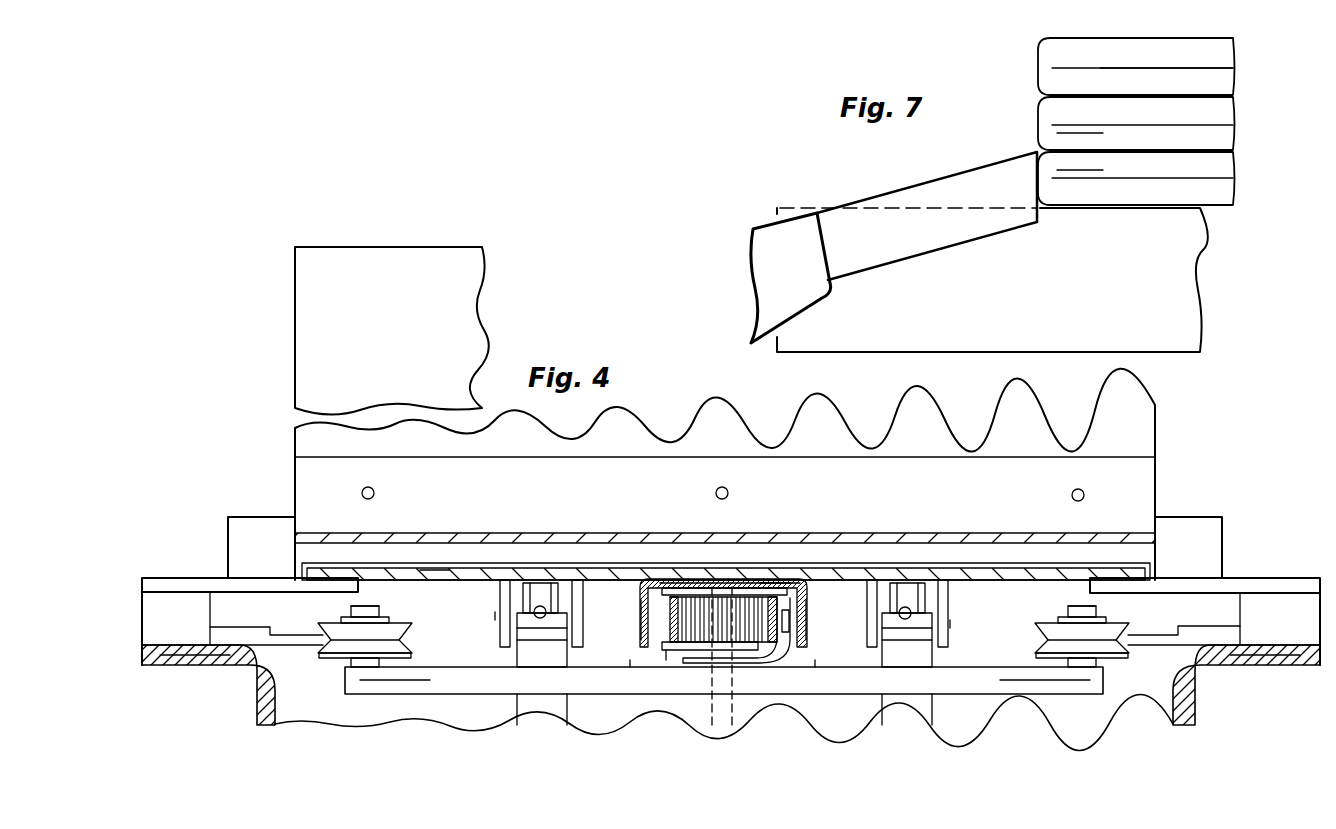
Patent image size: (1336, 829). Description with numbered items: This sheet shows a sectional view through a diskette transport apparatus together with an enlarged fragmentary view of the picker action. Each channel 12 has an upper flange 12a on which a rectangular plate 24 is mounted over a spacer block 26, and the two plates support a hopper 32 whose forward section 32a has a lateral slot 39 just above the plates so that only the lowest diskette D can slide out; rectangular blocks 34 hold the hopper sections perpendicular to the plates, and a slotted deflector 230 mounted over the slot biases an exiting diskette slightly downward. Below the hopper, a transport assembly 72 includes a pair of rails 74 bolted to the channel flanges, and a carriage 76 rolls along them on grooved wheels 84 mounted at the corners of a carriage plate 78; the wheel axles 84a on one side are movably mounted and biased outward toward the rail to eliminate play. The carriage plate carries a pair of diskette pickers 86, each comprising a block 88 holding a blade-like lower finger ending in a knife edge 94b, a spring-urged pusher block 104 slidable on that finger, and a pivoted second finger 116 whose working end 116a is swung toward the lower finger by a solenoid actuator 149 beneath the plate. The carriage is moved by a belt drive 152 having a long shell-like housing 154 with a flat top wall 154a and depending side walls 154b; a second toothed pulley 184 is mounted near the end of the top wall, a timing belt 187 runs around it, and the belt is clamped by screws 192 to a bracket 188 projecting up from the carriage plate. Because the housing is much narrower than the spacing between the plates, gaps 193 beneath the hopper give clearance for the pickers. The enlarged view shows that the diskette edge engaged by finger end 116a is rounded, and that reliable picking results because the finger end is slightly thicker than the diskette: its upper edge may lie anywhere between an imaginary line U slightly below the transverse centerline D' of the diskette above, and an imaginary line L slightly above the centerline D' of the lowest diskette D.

In FIG. 4, the hopper 32 is at (391, 240).
In FIG. 4, the forward hopper section 32a is at (310, 338).
In FIG. 4, the deflector 230 is at (312, 477).
In FIG. 4, the rectangular blocks 34 is at (263, 514).
In FIG. 4, the rectangular plate 24 is at (192, 583).
In FIG. 4, the spacer block 26 is at (172, 612).
In FIG. 4, the rails 74 is at (270, 632).
In FIG. 4, the channel 12 is at (250, 699).
In FIG. 4, the upper flange 12a is at (188, 652).
In FIG. 4, the transport assembly 72 is at (643, 708).
In FIG. 4, the grooved wheels 84 is at (405, 643).
In FIG. 4, the wheel axles 84a is at (368, 607).
In FIG. 4, the diskette pickers 86 is at (489, 618).
In FIG. 4, the carriage 76 is at (449, 706).
In FIG. 4, the carriage plate 78 is at (393, 683).
In FIG. 4, the solenoid actuator 149 is at (548, 717).
In FIG. 4, the pusher block 104 is at (537, 583).
In FIG. 4, the knife edge 94b is at (530, 637).
In FIG. 4, the second finger 116 is at (584, 611).
In FIG. 7, the second finger 116 is at (773, 227).
In FIG. 4, the block 88 is at (572, 652).
In FIG. 4, the belt drive 152 is at (618, 590).
In FIG. 4, the side walls 154b is at (637, 598).
In FIG. 4, the housing 154 is at (683, 580).
In FIG. 7, the housing 154 is at (1030, 300).
In FIG. 4, the top wall 154a is at (773, 590).
In FIG. 4, the second toothed pulley 184 is at (745, 593).
In FIG. 4, the screws 192 is at (764, 661).
In FIG. 4, the bracket 188 is at (745, 660).
In FIG. 4, the timing belt 187 is at (666, 620).
In FIG. 4, the gaps 193 is at (632, 660).
In FIG. 4, the lateral slot 39 is at (470, 580).
In FIG. 4, the diskette D is at (435, 530).
In FIG. 7, the diskette D is at (1165, 121).
In FIG. 7, the working end 116a is at (1040, 214).
In FIG. 7, the transverse centerline D' is at (1166, 124).
In FIG. 7, the imaginary line U is at (1065, 130).
In FIG. 7, the imaginary line L is at (1065, 165).